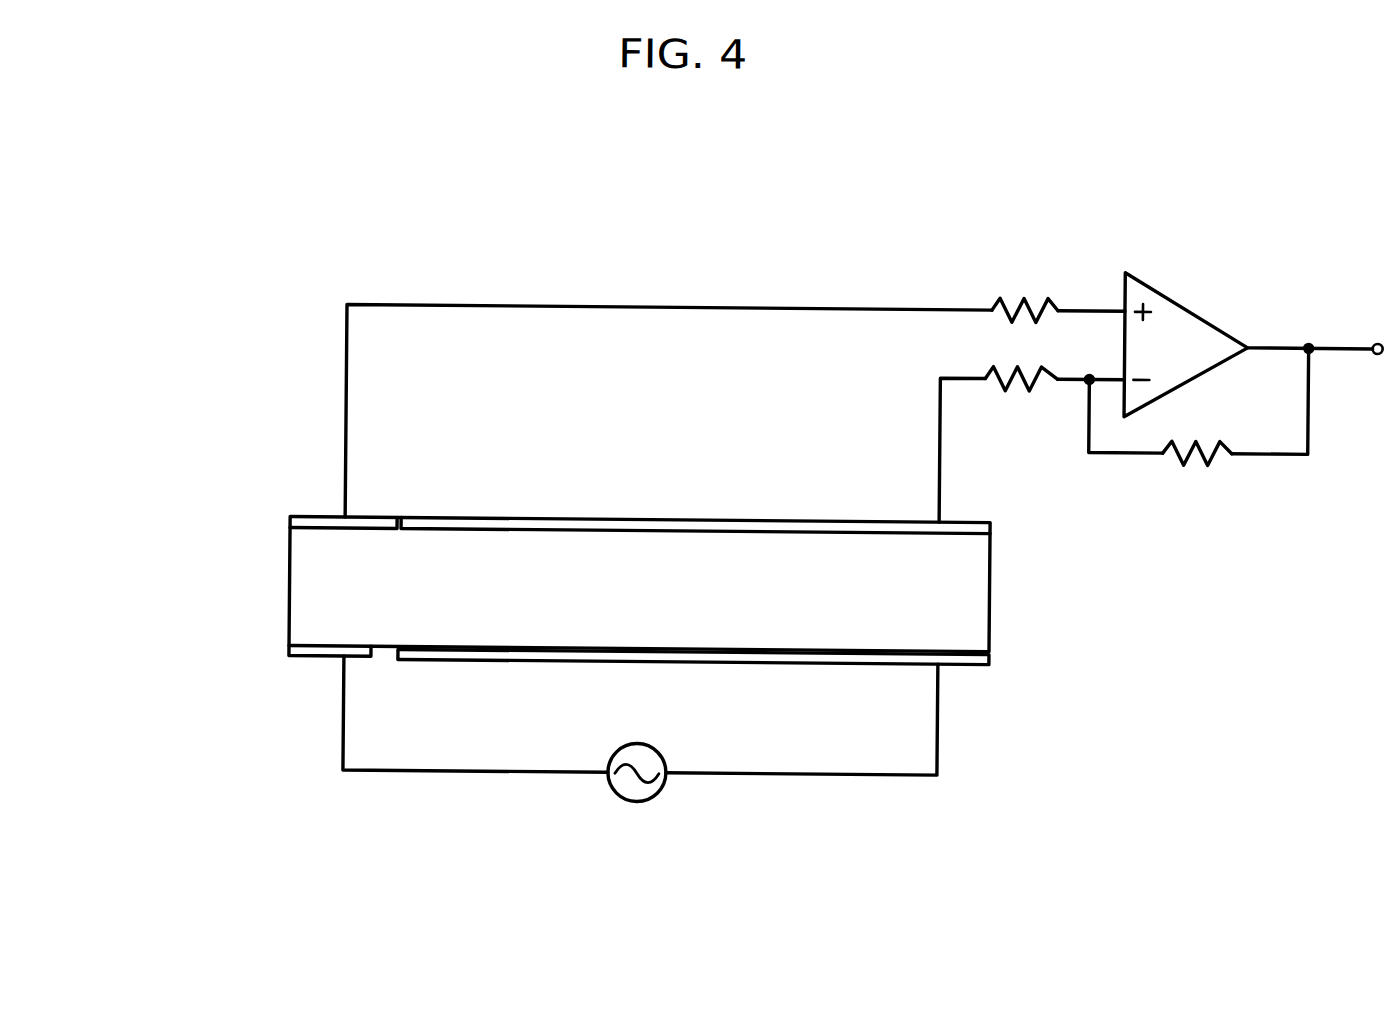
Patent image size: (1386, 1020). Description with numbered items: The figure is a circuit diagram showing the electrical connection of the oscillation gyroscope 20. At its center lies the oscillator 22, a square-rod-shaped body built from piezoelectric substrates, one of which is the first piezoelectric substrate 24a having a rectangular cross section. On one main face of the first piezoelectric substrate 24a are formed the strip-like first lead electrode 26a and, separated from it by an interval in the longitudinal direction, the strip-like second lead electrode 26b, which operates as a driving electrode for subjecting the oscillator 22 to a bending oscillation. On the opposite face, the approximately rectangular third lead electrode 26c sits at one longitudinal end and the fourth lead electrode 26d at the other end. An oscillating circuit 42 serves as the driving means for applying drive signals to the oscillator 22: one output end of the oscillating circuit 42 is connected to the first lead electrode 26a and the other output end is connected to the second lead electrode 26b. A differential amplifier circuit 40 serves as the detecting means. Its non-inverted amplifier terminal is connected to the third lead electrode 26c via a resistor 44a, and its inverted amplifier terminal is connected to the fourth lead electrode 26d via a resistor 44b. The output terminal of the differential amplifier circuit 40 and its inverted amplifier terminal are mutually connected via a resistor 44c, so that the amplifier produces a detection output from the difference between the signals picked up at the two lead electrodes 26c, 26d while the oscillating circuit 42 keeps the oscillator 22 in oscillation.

The oscillation gyroscope 20 is at (987, 135).
The oscillator 22 is at (992, 547).
The first piezoelectric substrate 24a is at (977, 600).
The first lead electrode 26a is at (325, 650).
The second lead electrode 26b is at (975, 655).
The third lead electrode 26c is at (320, 520).
The fourth lead electrode 26d is at (920, 517).
The differential amplifier circuit 40 is at (1198, 311).
The oscillating circuit 42 is at (664, 789).
The resistor 44a is at (997, 306).
The resistor 44b is at (998, 366).
The resistor 44c is at (1178, 453).